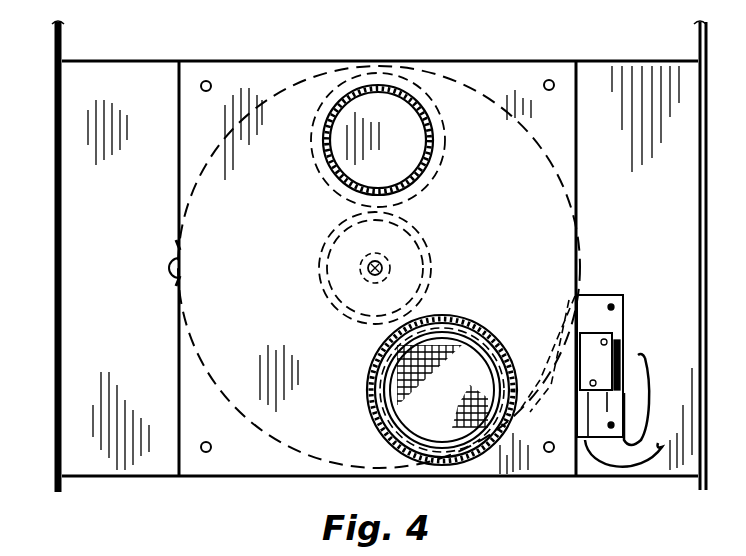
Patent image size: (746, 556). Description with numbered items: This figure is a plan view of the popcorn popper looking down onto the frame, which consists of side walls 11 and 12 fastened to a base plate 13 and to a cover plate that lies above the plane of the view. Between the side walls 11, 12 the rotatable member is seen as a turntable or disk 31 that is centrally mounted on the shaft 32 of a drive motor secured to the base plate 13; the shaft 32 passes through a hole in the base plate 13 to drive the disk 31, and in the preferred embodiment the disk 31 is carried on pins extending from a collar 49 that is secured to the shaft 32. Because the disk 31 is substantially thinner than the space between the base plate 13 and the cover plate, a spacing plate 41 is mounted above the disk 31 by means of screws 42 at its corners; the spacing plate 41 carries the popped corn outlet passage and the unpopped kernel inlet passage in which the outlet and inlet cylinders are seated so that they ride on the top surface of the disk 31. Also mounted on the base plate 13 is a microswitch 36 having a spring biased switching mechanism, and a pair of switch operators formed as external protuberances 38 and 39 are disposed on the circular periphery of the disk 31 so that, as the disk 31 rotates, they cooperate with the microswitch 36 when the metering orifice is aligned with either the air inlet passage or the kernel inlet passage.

The side wall 11 is at (54, 153).
The side wall 12 is at (711, 153).
The base plate 13 is at (96, 73).
The disk 31 is at (278, 450).
The shaft 32 is at (383, 258).
The microswitch 36 is at (603, 354).
The external protuberance 38 is at (172, 268).
The external protuberance 39 is at (556, 366).
The spacing plate 41 is at (250, 75).
The screws 42 is at (201, 84).
The collar 49 is at (390, 270).